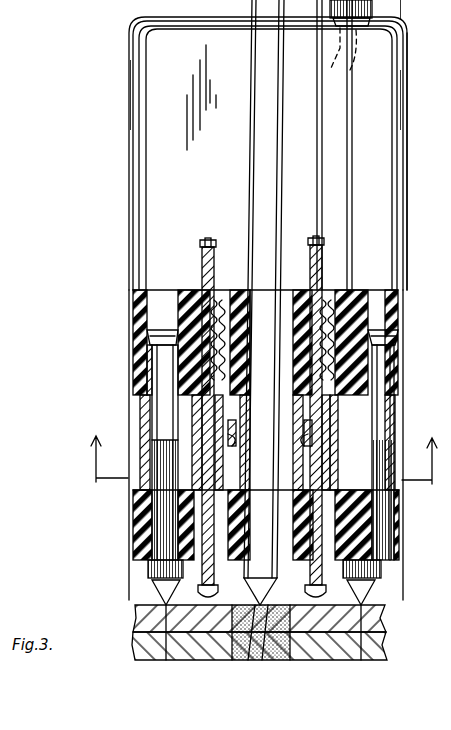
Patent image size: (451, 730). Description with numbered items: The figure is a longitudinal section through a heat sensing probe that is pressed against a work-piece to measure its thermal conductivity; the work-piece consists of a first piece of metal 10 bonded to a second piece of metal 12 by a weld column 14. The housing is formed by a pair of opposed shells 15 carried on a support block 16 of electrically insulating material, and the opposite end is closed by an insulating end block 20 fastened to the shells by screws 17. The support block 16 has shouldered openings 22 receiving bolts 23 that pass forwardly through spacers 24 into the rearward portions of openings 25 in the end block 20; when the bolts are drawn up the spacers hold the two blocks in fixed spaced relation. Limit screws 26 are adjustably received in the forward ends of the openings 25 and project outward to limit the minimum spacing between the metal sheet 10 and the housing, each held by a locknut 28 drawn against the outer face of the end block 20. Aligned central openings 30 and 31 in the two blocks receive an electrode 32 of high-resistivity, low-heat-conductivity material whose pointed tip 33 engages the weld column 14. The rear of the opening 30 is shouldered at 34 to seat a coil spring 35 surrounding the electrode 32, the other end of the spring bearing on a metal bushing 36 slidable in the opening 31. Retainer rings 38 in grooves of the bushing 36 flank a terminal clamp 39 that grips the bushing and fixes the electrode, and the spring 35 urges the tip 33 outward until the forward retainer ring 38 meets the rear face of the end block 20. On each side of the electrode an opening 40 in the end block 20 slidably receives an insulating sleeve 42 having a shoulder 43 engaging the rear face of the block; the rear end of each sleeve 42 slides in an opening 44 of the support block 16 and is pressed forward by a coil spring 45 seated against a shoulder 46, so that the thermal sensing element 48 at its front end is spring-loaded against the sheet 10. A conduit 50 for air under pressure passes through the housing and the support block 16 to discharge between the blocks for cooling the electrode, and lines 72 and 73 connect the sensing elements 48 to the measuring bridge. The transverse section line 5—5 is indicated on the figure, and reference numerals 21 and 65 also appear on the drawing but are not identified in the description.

The section line 5— 5 is at (263, 471).
The first piece of metal 10 is at (390, 618).
The second piece of metal 12 is at (386, 645).
The weld column 14 is at (283, 660).
The shells 15 is at (131, 138).
The support block 16 is at (140, 345).
The screws 17 is at (429, 161).
The end block 20 is at (135, 548).
The outer wall 21 is at (427, 445).
The shouldered openings 22 is at (140, 295).
The bolts 23 is at (138, 372).
The spacers 24 is at (140, 395).
The openings 25 is at (135, 520).
The limit screws 26 is at (155, 590).
The locknut 28 is at (145, 570).
The opening 30 is at (236, 318).
The opening 31 is at (274, 548).
The electrode 32 is at (254, 185).
The pointed tip 33 is at (248, 660).
The shoulder 34 is at (232, 345).
The coil spring 35 is at (244, 292).
The metal bushing 36 is at (248, 408).
The retainer rings 38 is at (238, 430).
The terminal clamp 39 is at (240, 470).
The openings 40 is at (196, 584).
The sleeve 42 is at (165, 445).
The shoulder 43 is at (135, 505).
The opening 44 is at (180, 315).
The coil spring 45 is at (205, 290).
The shoulder 46 is at (185, 292).
The thermal sensing element 48 is at (166, 660).
The conduit 50 is at (353, 118).
The fitting 65 is at (380, 20).
The line 72 is at (212, 244).
The line 73 is at (320, 244).